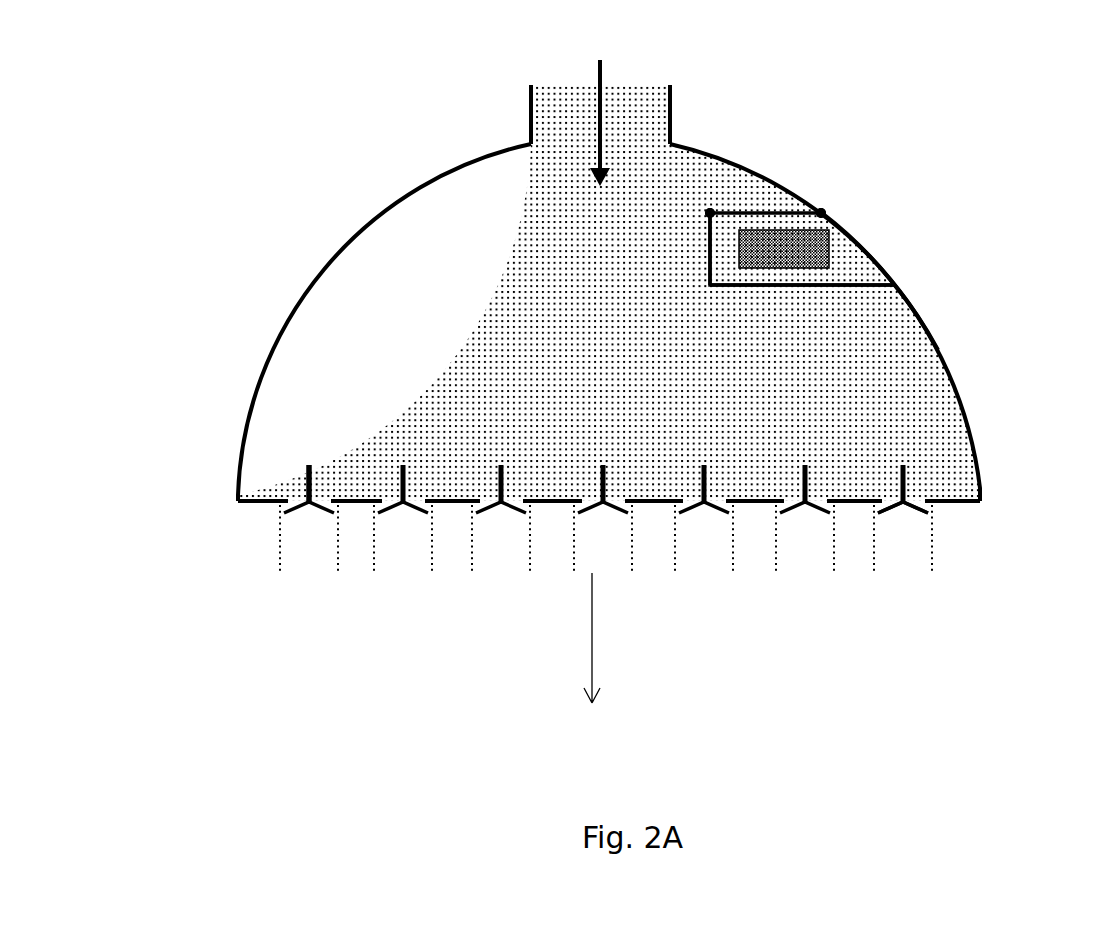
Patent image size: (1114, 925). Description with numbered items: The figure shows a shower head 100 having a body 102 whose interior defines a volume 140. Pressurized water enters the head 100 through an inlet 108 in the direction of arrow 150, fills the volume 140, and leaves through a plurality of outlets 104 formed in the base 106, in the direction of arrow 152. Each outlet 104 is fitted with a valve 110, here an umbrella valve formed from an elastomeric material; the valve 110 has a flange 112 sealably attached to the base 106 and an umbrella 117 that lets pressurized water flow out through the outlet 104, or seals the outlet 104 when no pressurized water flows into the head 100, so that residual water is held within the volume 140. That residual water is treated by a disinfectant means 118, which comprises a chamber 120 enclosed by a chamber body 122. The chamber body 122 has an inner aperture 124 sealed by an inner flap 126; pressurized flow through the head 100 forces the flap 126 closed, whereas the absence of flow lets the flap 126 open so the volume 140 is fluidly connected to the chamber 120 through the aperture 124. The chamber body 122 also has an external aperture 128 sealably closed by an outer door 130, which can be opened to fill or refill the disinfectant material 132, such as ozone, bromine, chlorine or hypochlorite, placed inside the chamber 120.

The shower head 100 is at (285, 108).
The body 102 is at (290, 318).
The outlets 104 is at (895, 503).
The base 106 is at (256, 503).
The inlet 108 is at (645, 103).
The valves 110 is at (903, 508).
The flange 112 is at (303, 500).
The umbrella 117 is at (321, 511).
The disinfectant means 118 is at (771, 306).
The chamber 120 is at (763, 225).
The chamber body 122 is at (847, 290).
The inner aperture 124 is at (720, 244).
The inner flap 126 is at (703, 228).
The external aperture 128 is at (863, 250).
The outer door 130 is at (878, 265).
The disinfectant material 132 is at (825, 212).
The volume 140 is at (418, 293).
The arrow 150 is at (597, 62).
The arrow 152 is at (597, 655).